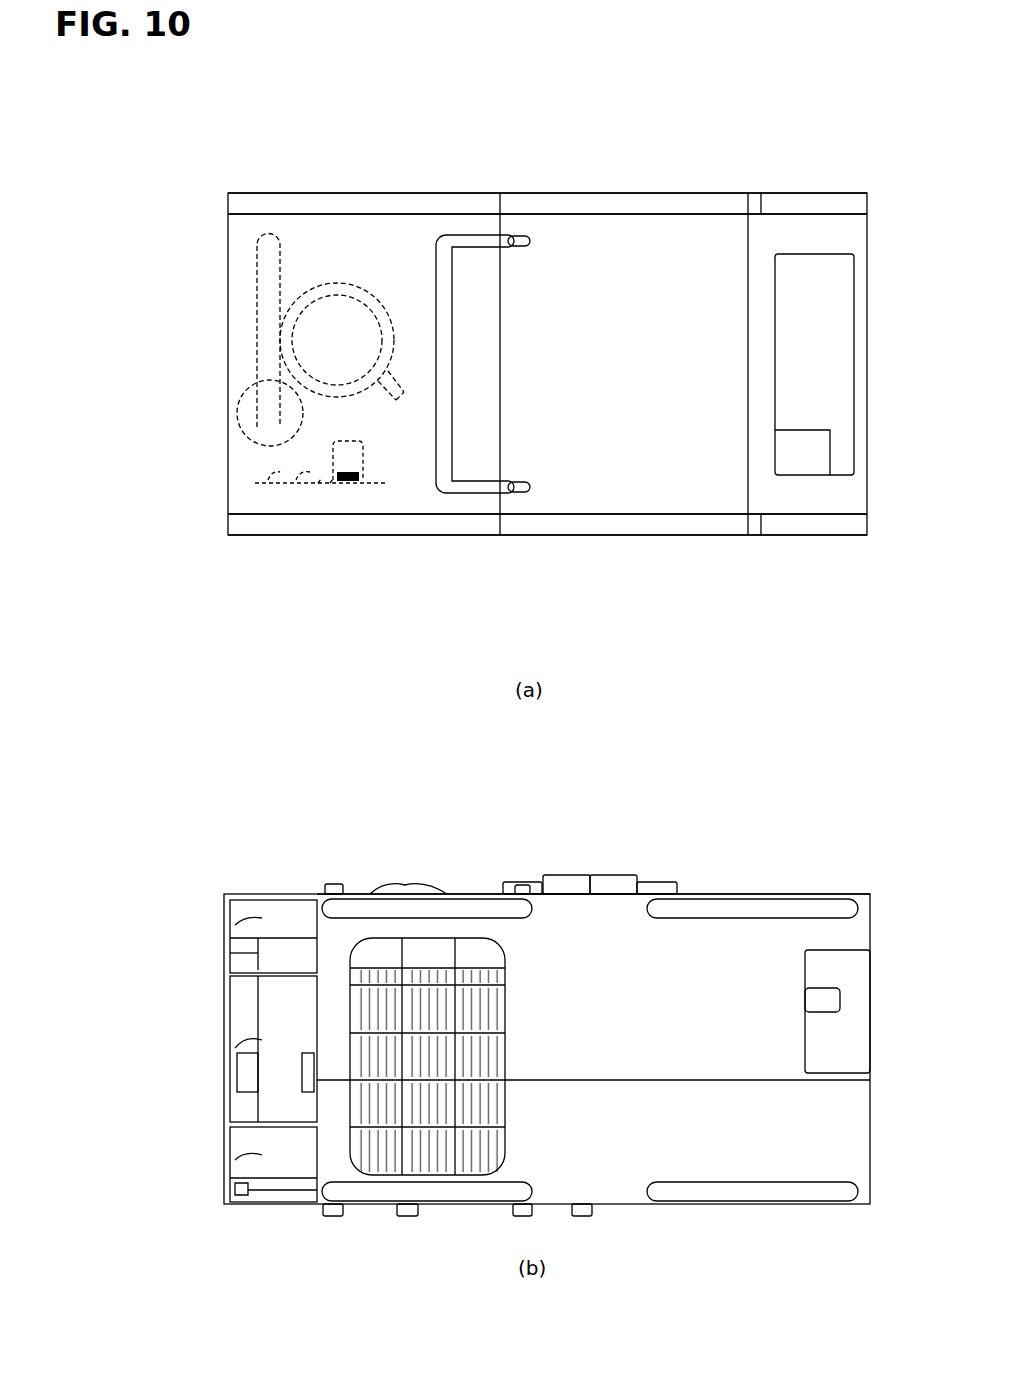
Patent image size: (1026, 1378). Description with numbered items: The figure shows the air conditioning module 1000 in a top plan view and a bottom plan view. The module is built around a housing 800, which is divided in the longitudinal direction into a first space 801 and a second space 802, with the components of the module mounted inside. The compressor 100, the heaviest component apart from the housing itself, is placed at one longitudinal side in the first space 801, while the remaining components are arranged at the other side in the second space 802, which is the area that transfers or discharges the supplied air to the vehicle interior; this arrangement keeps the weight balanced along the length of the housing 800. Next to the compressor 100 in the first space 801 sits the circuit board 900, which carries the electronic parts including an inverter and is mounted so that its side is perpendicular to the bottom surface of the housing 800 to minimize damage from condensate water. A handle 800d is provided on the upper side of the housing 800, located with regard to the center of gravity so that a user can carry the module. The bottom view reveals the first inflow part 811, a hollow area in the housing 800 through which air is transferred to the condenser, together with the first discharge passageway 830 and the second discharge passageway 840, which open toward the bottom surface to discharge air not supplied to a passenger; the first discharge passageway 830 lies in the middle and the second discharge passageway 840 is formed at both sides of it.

The air conditioning module 1000 is at (753, 94).
The compressor 100 is at (330, 303).
The handle 800d is at (470, 233).
The circuit board 900 is at (347, 487).
The first space 801 is at (432, 514).
The second space 802 is at (548, 514).
The housing 800 is at (560, 618).
The first inflow part 811 is at (468, 960).
The second discharge passageway 840 is at (260, 930).
The first discharge passageway 830 is at (260, 1040).